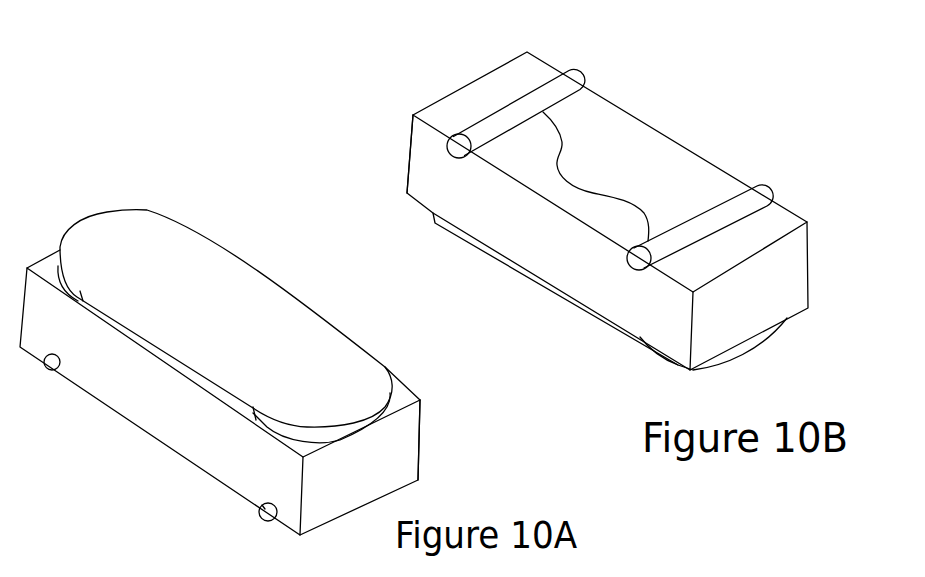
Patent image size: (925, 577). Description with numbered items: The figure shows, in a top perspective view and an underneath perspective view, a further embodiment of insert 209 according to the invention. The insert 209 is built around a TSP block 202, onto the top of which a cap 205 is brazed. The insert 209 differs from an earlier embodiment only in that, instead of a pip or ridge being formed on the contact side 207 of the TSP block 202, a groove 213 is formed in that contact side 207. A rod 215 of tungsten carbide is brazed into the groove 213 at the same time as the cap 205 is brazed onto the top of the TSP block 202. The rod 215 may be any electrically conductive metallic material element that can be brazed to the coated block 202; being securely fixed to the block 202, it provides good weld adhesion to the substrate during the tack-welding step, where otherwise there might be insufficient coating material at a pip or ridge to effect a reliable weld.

In FIG. 10A, the insert 209 is at (63, 218).
In FIG. 10B, the insert 209 is at (378, 124).
In FIG. 10A, the TSP block 202 is at (421, 400).
In FIG. 10B, the TSP block 202 is at (810, 223).
In FIG. 10A, the cap 205 is at (238, 290).
In FIG. 10B, the cap 205 is at (523, 277).
In FIG. 10A, the contact side 207 is at (153, 438).
In FIG. 10B, the contact side 207 is at (660, 153).
In FIG. 10A, the groove 213 is at (265, 509).
In FIG. 10B, the groove 213 is at (596, 176).
In FIG. 10A, the rod 215 is at (261, 517).
In FIG. 10B, the rod 215 is at (483, 133).